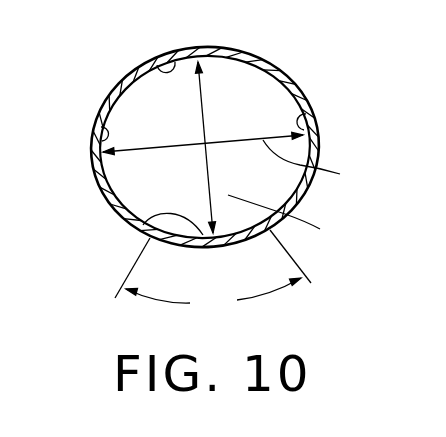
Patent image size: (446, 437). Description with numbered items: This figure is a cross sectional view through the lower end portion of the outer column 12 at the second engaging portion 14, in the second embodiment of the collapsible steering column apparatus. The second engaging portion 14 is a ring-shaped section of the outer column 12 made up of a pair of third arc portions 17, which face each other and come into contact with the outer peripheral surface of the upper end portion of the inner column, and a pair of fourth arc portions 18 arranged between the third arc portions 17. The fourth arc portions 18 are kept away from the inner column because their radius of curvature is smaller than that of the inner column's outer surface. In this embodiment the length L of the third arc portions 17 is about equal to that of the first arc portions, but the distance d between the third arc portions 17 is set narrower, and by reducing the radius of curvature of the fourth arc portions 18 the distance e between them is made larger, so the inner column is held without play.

The outer column 12 is at (226, 169).
The second engaging portion 14 is at (248, 54).
The third arc portions 17 is at (152, 62).
The fourth arc portions 18 is at (92, 129).